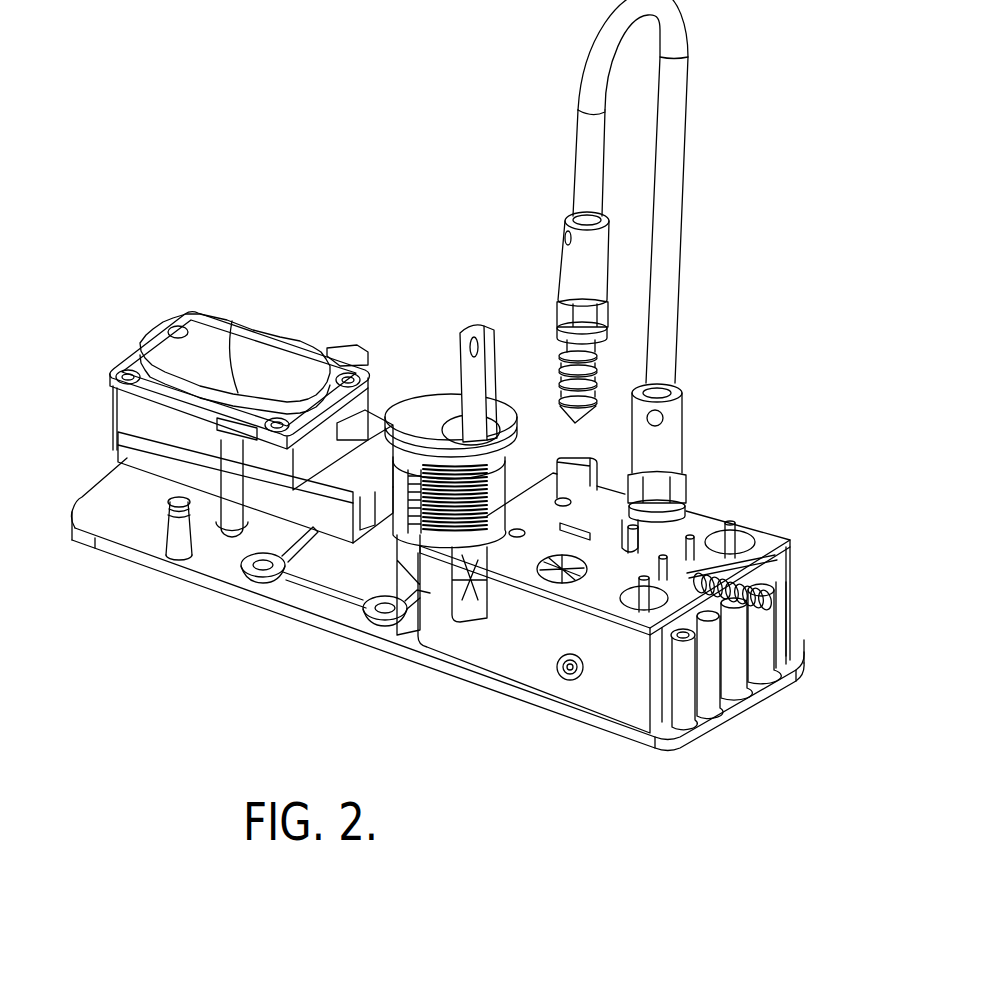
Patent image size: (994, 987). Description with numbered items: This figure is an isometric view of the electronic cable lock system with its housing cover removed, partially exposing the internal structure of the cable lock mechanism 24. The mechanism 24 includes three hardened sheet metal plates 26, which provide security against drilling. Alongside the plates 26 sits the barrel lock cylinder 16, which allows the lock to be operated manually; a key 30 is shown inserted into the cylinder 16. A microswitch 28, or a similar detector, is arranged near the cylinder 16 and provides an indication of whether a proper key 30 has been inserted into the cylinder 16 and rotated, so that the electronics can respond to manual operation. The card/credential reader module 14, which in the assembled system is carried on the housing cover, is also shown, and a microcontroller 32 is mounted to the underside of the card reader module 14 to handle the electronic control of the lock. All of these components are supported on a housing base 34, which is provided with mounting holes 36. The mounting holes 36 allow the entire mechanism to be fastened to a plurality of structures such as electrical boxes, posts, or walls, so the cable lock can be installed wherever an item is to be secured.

The card/credential reader module 14 is at (125, 462).
The barrel lock cylinder 16 is at (433, 413).
The cable lock mechanism 24 is at (438, 298).
The hardened sheet metal plates 26 is at (513, 672).
The microswitch 28 is at (350, 597).
The key 30 is at (496, 392).
The microcontroller 32 is at (108, 435).
The housing base 34 is at (143, 562).
The mounting holes 36 is at (238, 572).